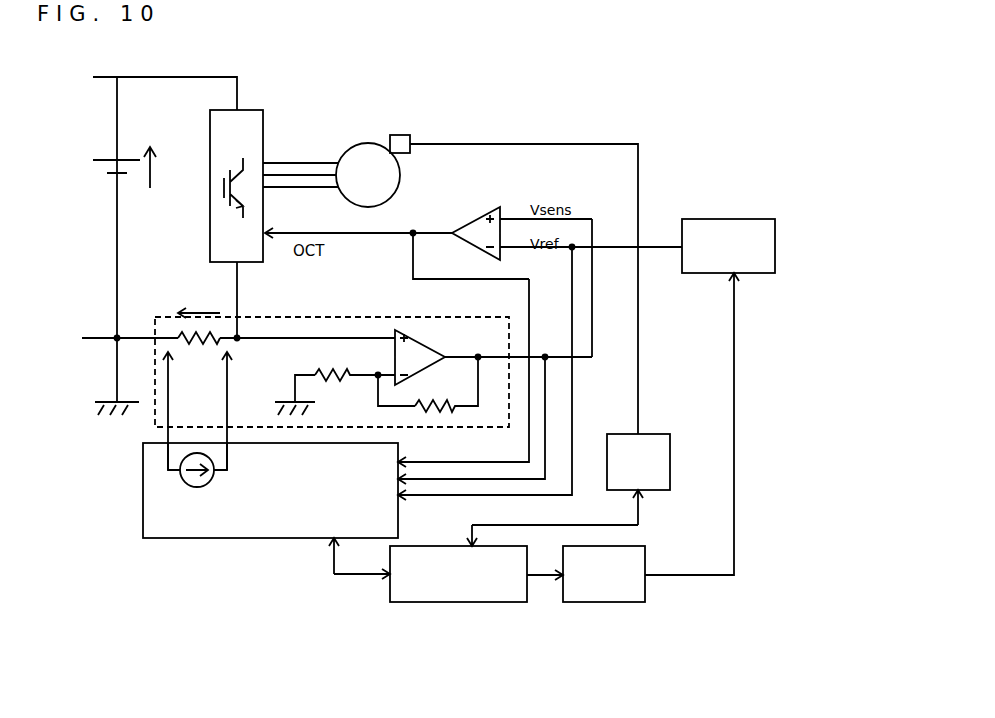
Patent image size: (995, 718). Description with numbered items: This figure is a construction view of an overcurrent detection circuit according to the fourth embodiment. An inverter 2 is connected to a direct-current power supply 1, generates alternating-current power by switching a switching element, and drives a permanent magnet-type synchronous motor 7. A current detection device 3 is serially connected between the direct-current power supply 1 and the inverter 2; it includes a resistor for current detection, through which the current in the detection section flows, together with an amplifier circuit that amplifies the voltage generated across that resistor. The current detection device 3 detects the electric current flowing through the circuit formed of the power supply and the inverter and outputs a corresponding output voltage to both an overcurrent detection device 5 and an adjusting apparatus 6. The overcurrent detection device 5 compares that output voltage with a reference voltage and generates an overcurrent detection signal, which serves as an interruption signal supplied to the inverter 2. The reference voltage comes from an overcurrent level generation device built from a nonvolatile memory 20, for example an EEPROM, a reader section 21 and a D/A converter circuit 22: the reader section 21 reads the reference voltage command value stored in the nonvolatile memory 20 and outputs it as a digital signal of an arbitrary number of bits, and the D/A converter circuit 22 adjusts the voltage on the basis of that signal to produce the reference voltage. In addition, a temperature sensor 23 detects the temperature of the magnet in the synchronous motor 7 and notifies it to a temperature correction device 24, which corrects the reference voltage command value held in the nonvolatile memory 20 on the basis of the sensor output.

The direct-current power supply 1 is at (98, 160).
The inverter 2 is at (252, 115).
The current detection device 3 is at (163, 332).
The overcurrent detection device 5 is at (465, 226).
The adjusting apparatus 6 is at (143, 500).
The permanent magnet-type synchronous motor 7 is at (348, 153).
The nonvolatile memory 20 is at (394, 603).
The reader section 21 is at (591, 603).
The D/A converter circuit 22 is at (768, 245).
The temperature sensor 23 is at (405, 134).
The temperature correction device 24 is at (655, 467).